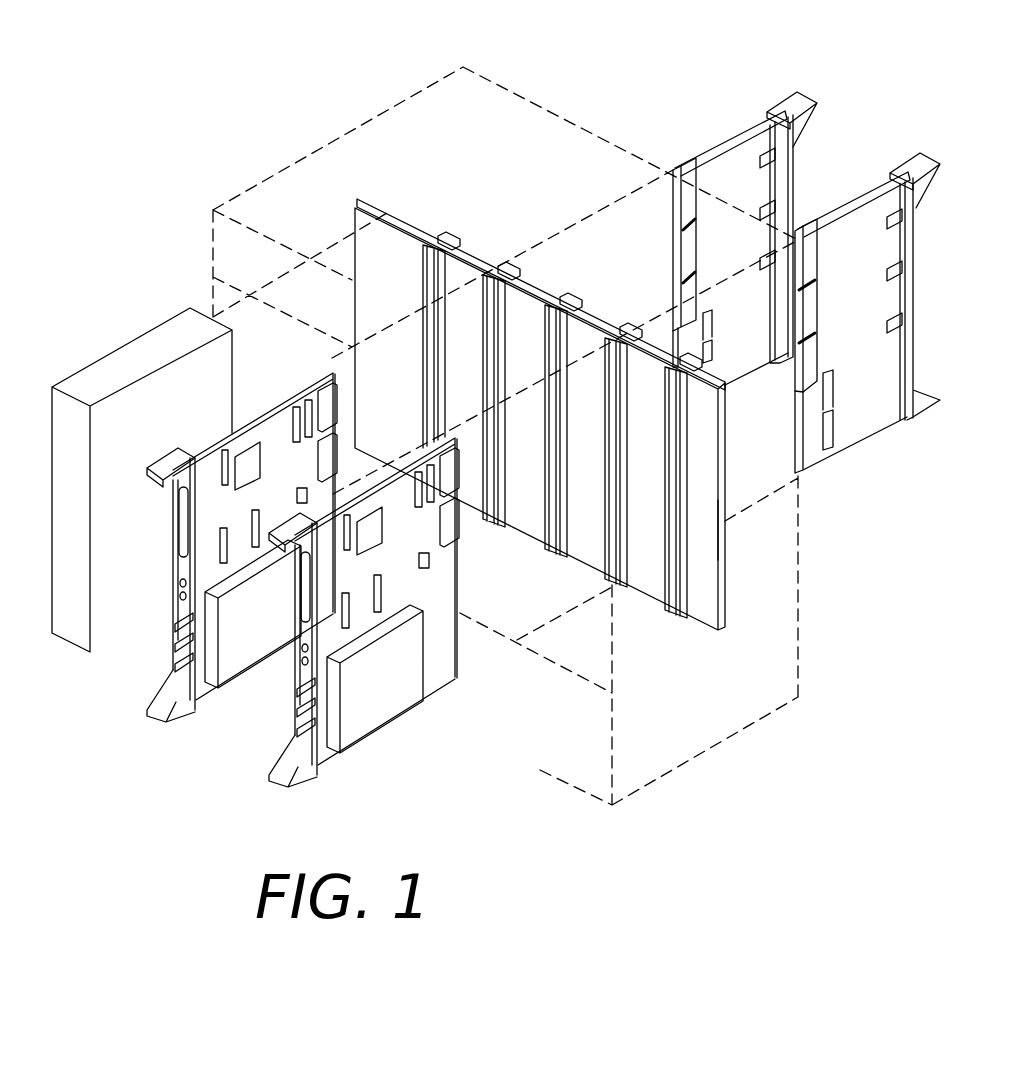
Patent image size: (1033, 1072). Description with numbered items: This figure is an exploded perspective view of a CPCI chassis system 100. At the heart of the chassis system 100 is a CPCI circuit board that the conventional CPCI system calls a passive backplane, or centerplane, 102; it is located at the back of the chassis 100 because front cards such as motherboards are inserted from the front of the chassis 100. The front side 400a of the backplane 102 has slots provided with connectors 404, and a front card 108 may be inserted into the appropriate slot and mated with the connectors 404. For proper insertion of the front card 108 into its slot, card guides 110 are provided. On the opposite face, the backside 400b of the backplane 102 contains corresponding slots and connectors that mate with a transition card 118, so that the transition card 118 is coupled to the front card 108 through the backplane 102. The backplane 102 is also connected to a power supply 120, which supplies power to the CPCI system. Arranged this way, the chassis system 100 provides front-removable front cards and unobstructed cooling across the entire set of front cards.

The chassis system 100 is at (708, 700).
The backplane 102 is at (418, 220).
The front card 108 is at (163, 716).
The card guides 110 is at (487, 657).
The transition card 118 is at (745, 130).
The power supply 120 is at (88, 388).
The connectors 404 is at (507, 263).
The front side 400a is at (700, 558).
The backside 400b is at (725, 532).